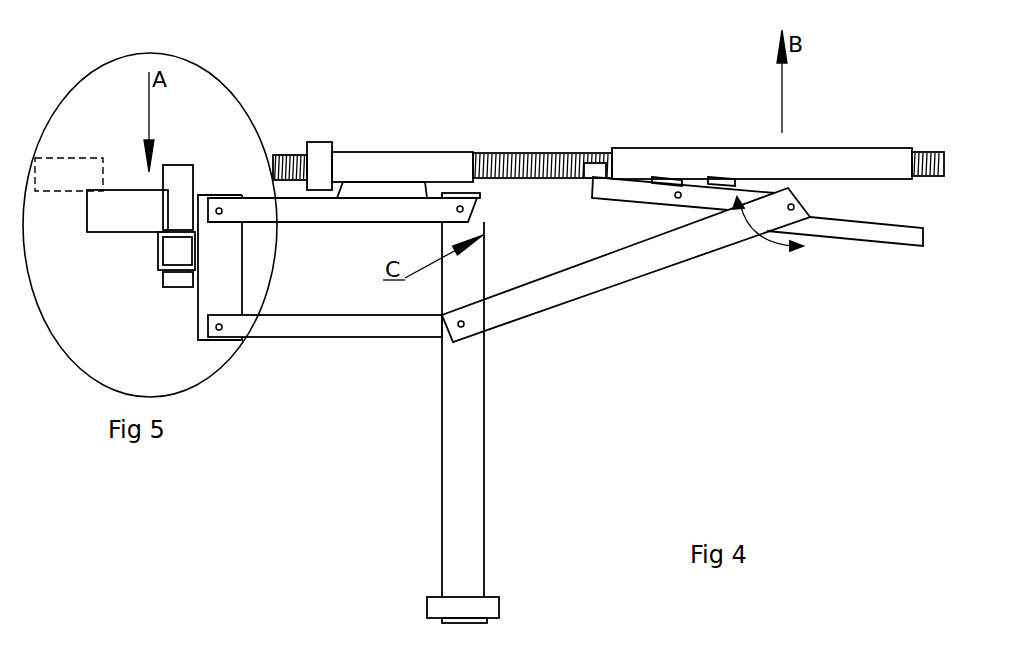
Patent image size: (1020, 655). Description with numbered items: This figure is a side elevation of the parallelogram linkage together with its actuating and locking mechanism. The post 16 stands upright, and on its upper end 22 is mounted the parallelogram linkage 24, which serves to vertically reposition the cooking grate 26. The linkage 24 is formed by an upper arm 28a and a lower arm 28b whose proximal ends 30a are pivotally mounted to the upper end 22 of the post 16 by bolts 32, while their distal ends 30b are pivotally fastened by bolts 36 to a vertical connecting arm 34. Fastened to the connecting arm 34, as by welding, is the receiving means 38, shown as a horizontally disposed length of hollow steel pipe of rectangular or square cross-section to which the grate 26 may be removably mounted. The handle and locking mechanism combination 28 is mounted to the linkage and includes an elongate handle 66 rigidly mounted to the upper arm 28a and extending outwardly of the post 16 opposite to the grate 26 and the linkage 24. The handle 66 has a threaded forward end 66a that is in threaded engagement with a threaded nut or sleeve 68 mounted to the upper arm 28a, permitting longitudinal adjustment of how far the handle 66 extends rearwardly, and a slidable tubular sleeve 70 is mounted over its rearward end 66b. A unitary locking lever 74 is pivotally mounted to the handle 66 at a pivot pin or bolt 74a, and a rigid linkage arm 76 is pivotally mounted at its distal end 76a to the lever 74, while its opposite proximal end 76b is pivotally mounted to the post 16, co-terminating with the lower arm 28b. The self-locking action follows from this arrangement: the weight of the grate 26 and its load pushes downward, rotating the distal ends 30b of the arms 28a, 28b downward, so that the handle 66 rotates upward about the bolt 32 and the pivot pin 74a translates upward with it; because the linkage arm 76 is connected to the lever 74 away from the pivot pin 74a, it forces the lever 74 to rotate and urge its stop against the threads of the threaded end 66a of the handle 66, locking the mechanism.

The post 16 is at (468, 528).
The upper end of post 22 is at (472, 297).
The parallelogram linkage 24 is at (344, 313).
The cooking grate 26 is at (119, 142).
The handle and locking mechanism combination 28 is at (778, 110).
The upper arm 28a is at (298, 215).
The lower arm 28b is at (373, 309).
The proximal ends of arms 30a is at (575, 201).
The distal ends of arms 30b is at (230, 218).
The bolts 32 is at (463, 211).
The vertical connecting arm 34 is at (225, 293).
The bolts 36 is at (221, 208).
The receiving means 38 is at (158, 262).
The elongate handle 66 is at (442, 112).
The threaded forward end of handle 66a is at (503, 157).
The rearward end of handle 66b is at (931, 152).
The threaded nut or sleeve 68 is at (323, 158).
The slidable tubular sleeve 70 is at (878, 153).
The locking lever 74 is at (857, 233).
The pivot pin or bolt 74a is at (677, 197).
The rigid linkage arm 76 is at (626, 266).
The distal end of linkage arm 76a is at (757, 233).
The proximal end of linkage arm 76b is at (597, 344).